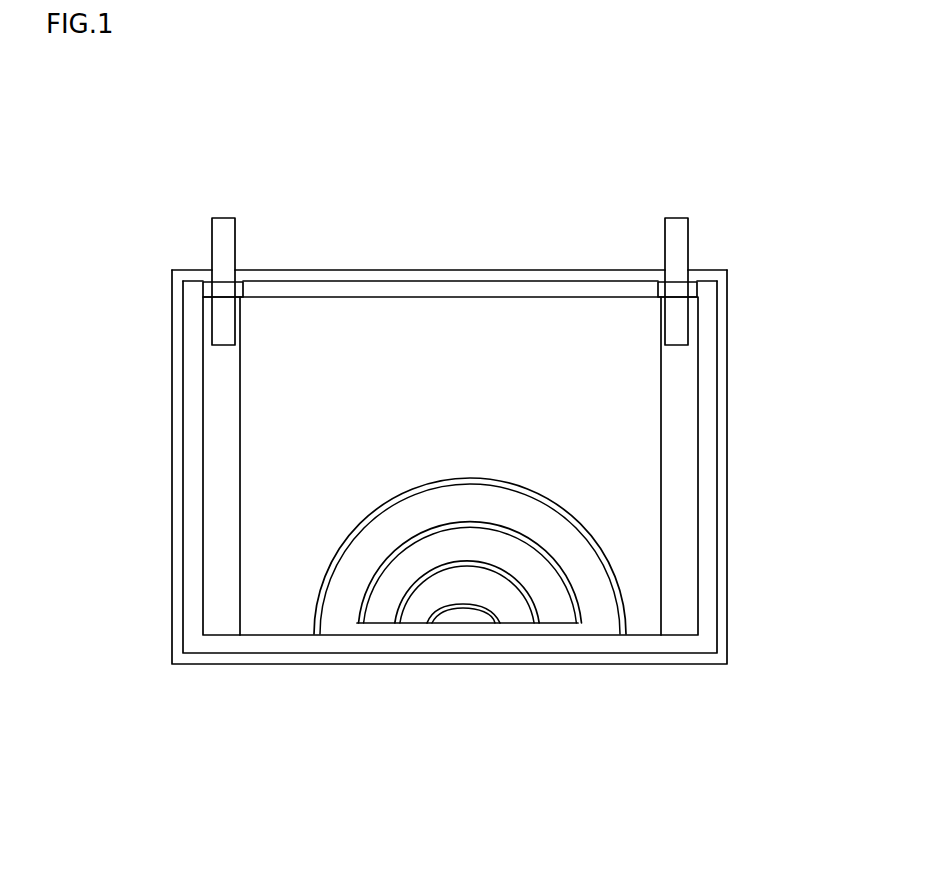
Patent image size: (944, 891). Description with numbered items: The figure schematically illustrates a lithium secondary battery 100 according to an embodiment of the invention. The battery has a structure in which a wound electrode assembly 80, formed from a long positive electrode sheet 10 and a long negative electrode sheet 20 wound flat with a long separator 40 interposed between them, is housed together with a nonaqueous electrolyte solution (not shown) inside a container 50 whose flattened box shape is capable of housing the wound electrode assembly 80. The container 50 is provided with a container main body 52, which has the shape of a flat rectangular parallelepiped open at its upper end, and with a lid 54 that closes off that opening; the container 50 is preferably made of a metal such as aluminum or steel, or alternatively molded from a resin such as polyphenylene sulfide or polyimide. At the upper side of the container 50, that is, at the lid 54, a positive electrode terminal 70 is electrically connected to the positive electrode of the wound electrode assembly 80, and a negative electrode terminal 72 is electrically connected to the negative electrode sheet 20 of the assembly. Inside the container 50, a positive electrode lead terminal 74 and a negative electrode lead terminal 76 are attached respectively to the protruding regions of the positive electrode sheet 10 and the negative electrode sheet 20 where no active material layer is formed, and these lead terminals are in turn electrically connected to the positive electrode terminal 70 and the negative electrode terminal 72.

The lithium secondary battery 100 is at (741, 173).
The positive electrode sheet 10 is at (287, 553).
The negative electrode sheet 20 is at (373, 603).
The separator 40 is at (335, 623).
The container 50 is at (738, 563).
The container main body 52 is at (730, 398).
The lid 54 is at (312, 268).
The positive electrode terminal 70 is at (223, 232).
The negative electrode terminal 72 is at (678, 232).
The positive electrode lead terminal 74 is at (218, 317).
The negative electrode lead terminal 76 is at (680, 330).
The wound electrode assembly 80 is at (352, 333).